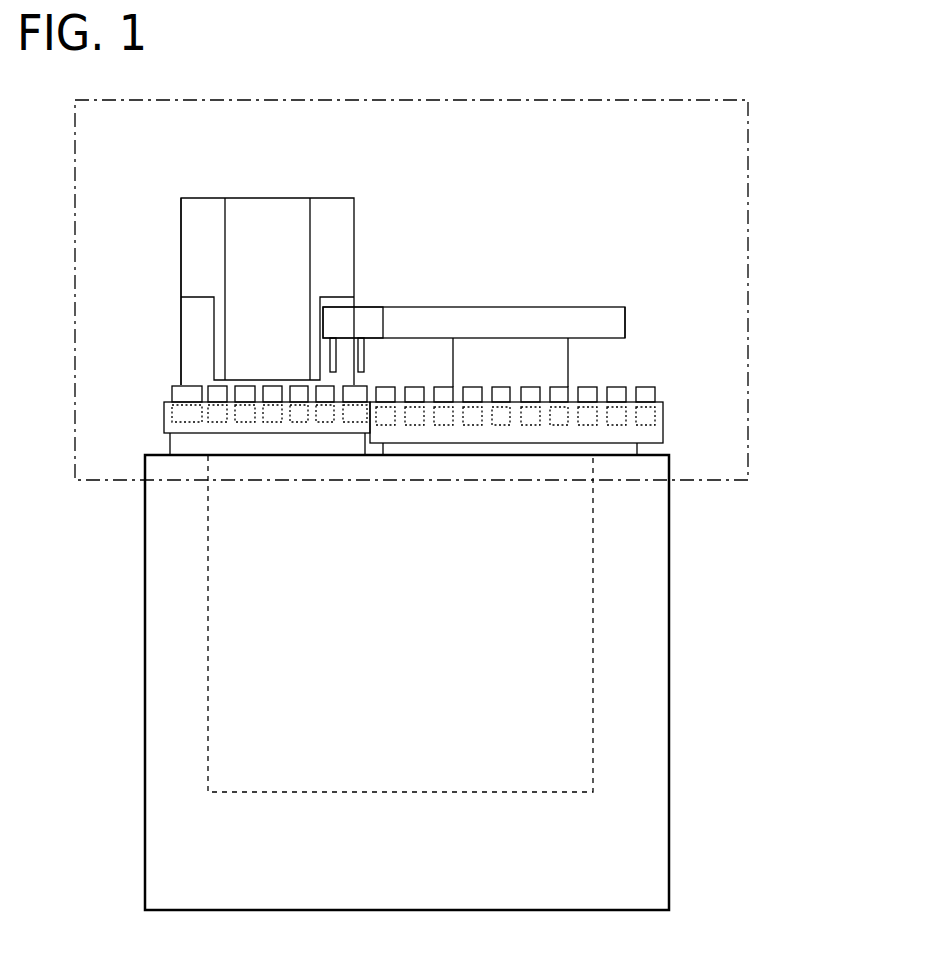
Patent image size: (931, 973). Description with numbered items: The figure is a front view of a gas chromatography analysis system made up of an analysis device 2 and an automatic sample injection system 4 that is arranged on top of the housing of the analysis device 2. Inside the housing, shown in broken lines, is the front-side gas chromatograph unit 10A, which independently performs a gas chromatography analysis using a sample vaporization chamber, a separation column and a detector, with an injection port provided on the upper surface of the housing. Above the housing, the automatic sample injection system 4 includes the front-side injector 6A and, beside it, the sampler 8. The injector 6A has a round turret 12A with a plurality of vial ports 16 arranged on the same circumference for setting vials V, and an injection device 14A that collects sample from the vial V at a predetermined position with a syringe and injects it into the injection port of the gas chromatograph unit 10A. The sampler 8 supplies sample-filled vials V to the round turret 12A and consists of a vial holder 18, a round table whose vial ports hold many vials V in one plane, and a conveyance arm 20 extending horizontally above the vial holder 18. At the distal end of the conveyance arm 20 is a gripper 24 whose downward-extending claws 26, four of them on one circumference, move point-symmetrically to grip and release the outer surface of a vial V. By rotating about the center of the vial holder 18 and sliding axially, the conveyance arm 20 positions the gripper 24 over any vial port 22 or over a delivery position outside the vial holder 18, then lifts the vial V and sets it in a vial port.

The analysis device 2 is at (670, 571).
The automatic sample injection system 4 is at (748, 142).
The injector 6A is at (245, 183).
The sampler 8 is at (650, 335).
The gas chromatograph unit 10A is at (593, 680).
The round turret 12A is at (164, 413).
The injection device 14A is at (180, 276).
The vial ports 16 is at (180, 402).
The vial holder 18 is at (663, 422).
The conveyance arm 20 is at (510, 313).
The vial port 22 is at (650, 417).
The gripper 24 is at (352, 318).
The claws 26 is at (370, 360).
The vial V is at (185, 403).